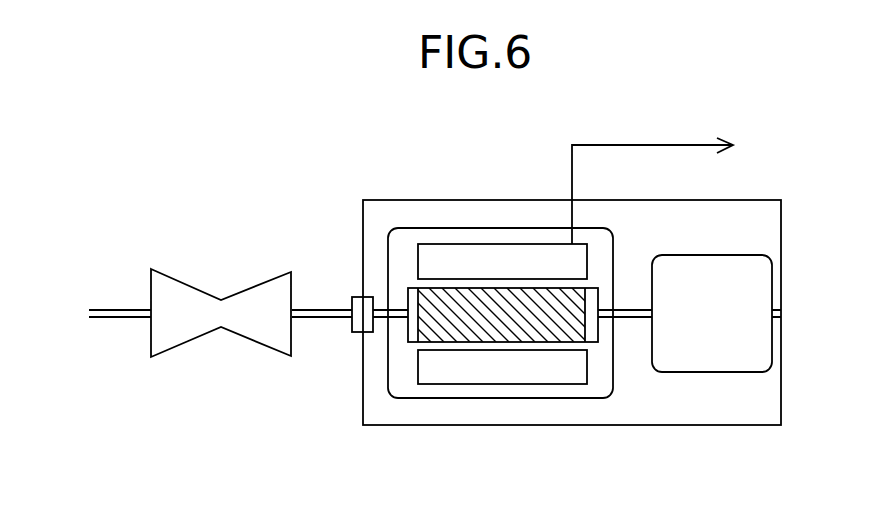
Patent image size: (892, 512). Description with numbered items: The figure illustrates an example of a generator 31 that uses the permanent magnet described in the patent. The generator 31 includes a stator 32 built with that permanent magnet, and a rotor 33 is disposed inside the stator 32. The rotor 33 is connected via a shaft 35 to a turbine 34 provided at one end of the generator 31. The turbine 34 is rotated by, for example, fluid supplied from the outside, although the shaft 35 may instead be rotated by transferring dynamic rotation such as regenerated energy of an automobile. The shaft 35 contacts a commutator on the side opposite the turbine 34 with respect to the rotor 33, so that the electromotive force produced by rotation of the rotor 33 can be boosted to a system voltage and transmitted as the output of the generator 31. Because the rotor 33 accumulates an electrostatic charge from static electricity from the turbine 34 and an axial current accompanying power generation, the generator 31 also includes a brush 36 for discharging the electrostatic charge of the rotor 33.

The generator 31 is at (408, 200).
The stator 32 is at (472, 375).
The rotor 33 is at (515, 332).
The turbine 34 is at (262, 280).
The shaft 35 is at (327, 318).
The brush 36 is at (702, 358).